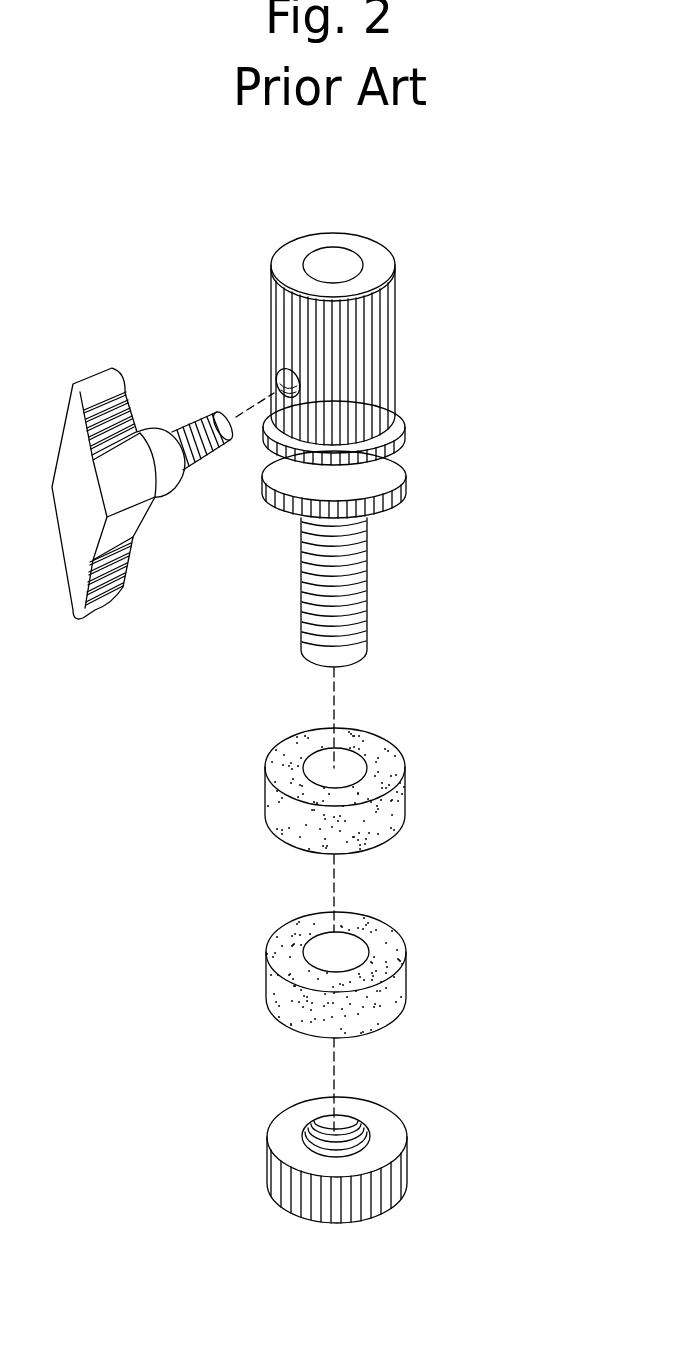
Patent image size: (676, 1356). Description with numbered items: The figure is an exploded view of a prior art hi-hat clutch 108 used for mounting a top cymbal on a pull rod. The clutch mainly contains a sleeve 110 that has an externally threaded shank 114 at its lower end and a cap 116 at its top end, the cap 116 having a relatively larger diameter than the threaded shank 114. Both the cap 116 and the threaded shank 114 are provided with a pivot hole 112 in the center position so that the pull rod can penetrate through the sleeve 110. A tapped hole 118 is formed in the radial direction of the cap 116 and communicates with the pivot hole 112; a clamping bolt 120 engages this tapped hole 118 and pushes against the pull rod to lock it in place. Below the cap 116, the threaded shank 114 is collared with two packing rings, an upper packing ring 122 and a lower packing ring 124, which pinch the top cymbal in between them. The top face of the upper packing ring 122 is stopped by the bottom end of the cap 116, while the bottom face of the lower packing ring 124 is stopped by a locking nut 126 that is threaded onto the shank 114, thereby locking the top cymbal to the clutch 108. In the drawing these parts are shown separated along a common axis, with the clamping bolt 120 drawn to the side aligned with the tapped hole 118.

The hi-hat clutch 108 is at (477, 197).
The sleeve 110 is at (295, 593).
The pivot hole 112 is at (337, 260).
The threaded shank 114 is at (312, 558).
The cap 116 is at (275, 305).
The tapped hole 118 is at (272, 383).
The clamping bolt 120 is at (168, 502).
The upper packing ring 122 is at (278, 812).
The lower packing ring 124 is at (278, 998).
The locking nut 126 is at (278, 1178).